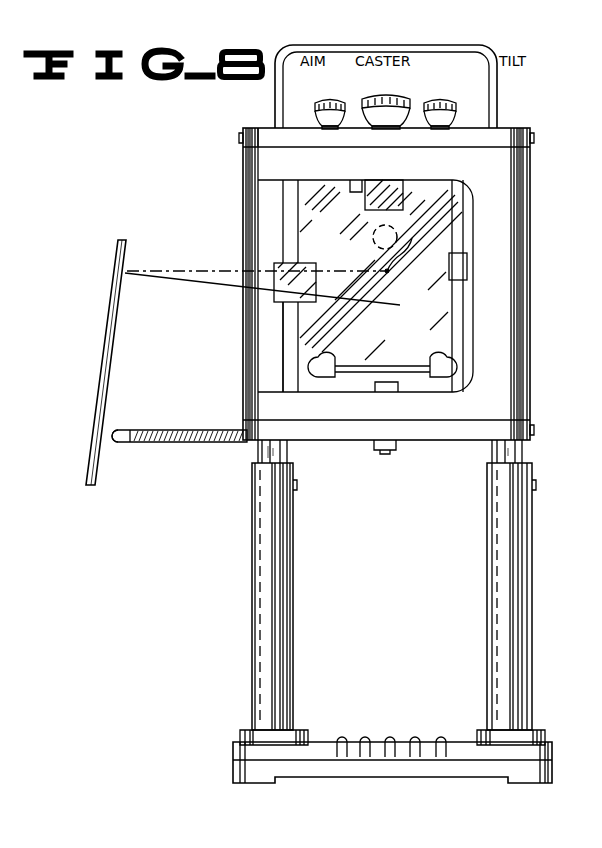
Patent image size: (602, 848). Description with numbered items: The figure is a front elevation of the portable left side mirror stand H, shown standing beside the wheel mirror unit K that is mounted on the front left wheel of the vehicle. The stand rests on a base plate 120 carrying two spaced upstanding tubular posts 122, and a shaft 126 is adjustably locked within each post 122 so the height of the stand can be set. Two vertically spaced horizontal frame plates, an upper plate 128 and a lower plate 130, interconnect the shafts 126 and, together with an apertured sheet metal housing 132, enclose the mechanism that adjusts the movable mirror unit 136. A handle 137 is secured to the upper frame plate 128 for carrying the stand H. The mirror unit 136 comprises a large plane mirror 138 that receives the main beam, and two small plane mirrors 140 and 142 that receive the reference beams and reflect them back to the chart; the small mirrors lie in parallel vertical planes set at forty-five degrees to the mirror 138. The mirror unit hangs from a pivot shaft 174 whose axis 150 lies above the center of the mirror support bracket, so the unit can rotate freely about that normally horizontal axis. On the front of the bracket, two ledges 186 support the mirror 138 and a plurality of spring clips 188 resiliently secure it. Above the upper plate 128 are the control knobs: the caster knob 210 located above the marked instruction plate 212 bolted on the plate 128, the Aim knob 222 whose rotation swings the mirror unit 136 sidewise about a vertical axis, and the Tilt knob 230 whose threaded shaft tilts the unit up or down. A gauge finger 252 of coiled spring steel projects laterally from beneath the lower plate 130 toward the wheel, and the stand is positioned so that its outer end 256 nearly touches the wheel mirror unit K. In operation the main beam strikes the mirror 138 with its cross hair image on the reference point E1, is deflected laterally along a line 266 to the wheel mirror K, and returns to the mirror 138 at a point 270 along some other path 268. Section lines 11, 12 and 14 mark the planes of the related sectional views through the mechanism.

The section line 11- 11 is at (382, 18).
The section line 12- 12 is at (243, 172).
The section line 14- 14 is at (547, 105).
The base plate 120 is at (368, 738).
The tubular posts 122 is at (490, 552).
The shaft 126 is at (265, 452).
The upper frame plate 128 is at (258, 135).
The lower frame plate 130 is at (368, 438).
The apertured sheet metal housing 132 is at (505, 240).
The mirror unit 136 is at (300, 222).
The handle 137 is at (465, 47).
The large plane mirror 138 is at (300, 340).
The small plane mirror 140 is at (380, 184).
The small plane mirror 142 is at (308, 302).
The horizontal axis 150 is at (378, 232).
The pivot shaft 174 is at (375, 240).
The ledges 186 is at (432, 372).
The spring clips 188 is at (352, 182).
The caster knob 210 is at (410, 96).
The instruction plate 212 is at (265, 125).
The Aim knob 222 is at (340, 97).
The Tilt knob 230 is at (445, 98).
The gauge finger 252 is at (214, 428).
The outer end of gauge finger 256 is at (124, 430).
The line 266 is at (213, 264).
The path 268 is at (182, 282).
The point 270 is at (420, 320).
The reference point E1 is at (412, 250).
The portable left side mirror stand H is at (243, 192).
The wheel mirror unit K is at (108, 334).